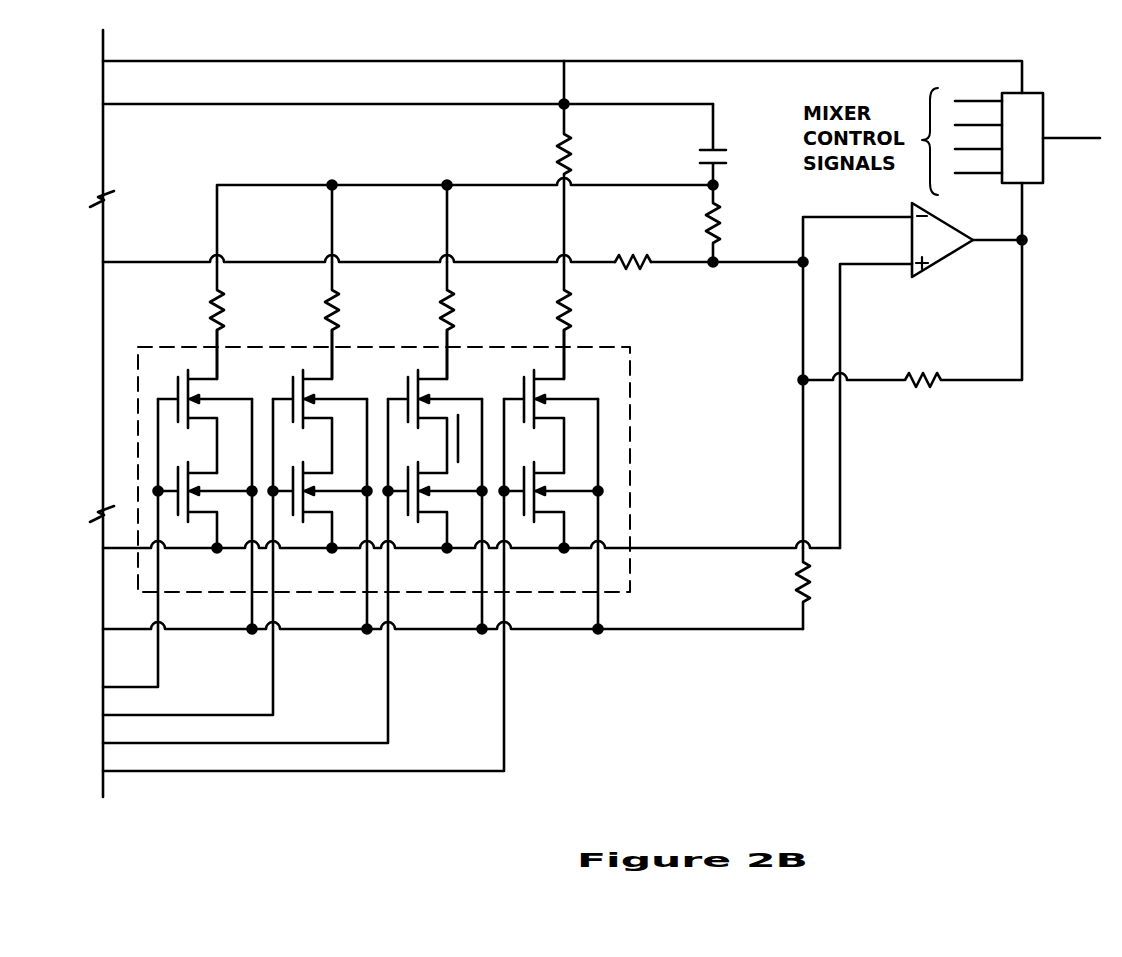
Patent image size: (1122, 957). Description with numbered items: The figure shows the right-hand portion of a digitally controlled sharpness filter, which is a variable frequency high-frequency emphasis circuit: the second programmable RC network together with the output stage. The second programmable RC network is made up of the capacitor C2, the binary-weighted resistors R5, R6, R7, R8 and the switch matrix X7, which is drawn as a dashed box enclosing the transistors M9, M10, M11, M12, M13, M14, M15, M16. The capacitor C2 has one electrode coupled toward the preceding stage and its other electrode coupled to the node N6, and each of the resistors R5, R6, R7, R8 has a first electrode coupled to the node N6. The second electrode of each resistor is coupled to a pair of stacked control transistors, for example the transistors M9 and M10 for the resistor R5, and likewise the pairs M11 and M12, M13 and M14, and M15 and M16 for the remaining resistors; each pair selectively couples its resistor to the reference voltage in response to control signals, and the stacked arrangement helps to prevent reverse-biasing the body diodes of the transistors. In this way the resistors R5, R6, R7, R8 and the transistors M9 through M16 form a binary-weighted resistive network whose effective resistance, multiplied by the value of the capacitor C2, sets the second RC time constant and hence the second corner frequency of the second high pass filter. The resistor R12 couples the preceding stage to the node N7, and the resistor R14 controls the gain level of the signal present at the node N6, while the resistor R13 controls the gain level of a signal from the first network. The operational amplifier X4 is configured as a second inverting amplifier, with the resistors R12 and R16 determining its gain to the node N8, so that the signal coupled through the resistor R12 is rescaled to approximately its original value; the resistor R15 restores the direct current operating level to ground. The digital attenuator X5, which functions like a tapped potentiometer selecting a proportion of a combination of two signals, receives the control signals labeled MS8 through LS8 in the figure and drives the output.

The node N6 is at (246, 185).
The node N7 is at (802, 270).
The node N8 is at (1020, 246).
The resistor R5 is at (328, 282).
The resistor R6 is at (361, 320).
The resistor R7 is at (482, 320).
The resistor R8 is at (599, 320).
The resistor R12 is at (532, 161).
The resistor R13 is at (634, 240).
The resistor R14 is at (739, 226).
The resistor R15 is at (830, 588).
The resistor R16 is at (912, 313).
The capacitor C2 is at (693, 144).
The operational amplifier X4 is at (967, 241).
The digital attenuator X5 is at (1027, 124).
The switch matrix X7 is at (632, 407).
The transistor M9 is at (207, 401).
The transistor M10 is at (205, 522).
The transistor M11 is at (329, 401).
The transistor M12 is at (320, 522).
The transistor M13 is at (444, 401).
The transistor M14 is at (435, 522).
The transistor M15 is at (560, 401).
The transistor M16 is at (551, 522).
The mixer control signal MS8 (most significant) MS8 is at (976, 89).
The mixer control signal LS8 (least significant) LS8 is at (976, 188).